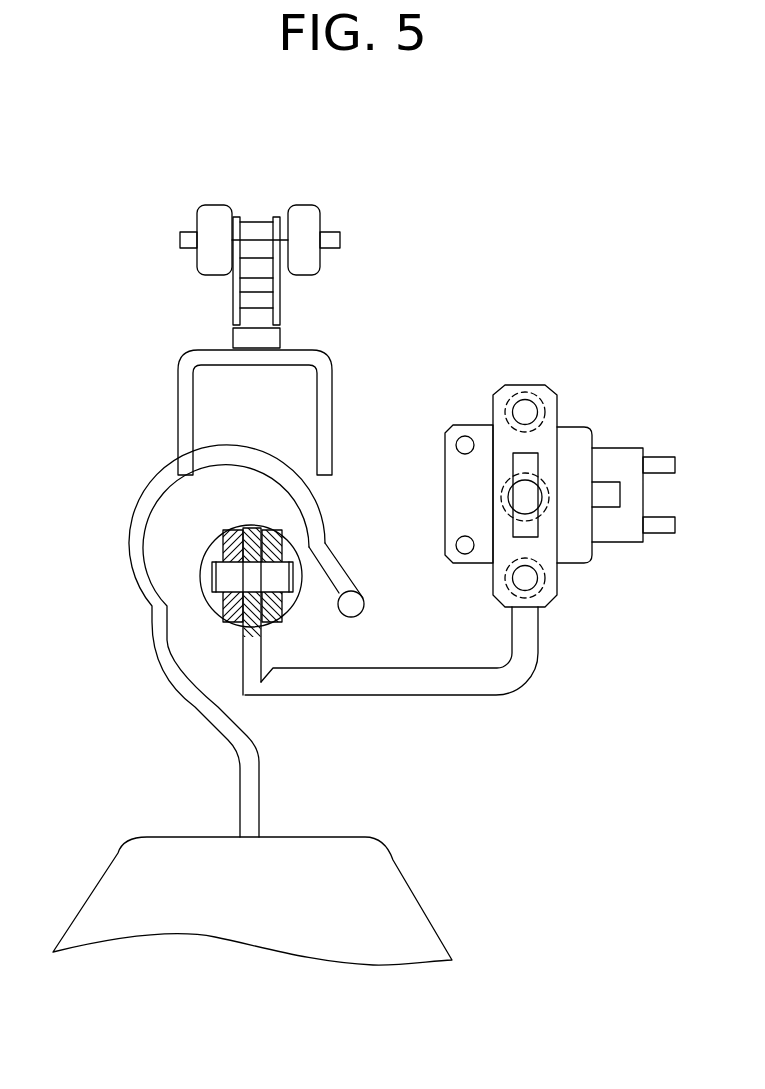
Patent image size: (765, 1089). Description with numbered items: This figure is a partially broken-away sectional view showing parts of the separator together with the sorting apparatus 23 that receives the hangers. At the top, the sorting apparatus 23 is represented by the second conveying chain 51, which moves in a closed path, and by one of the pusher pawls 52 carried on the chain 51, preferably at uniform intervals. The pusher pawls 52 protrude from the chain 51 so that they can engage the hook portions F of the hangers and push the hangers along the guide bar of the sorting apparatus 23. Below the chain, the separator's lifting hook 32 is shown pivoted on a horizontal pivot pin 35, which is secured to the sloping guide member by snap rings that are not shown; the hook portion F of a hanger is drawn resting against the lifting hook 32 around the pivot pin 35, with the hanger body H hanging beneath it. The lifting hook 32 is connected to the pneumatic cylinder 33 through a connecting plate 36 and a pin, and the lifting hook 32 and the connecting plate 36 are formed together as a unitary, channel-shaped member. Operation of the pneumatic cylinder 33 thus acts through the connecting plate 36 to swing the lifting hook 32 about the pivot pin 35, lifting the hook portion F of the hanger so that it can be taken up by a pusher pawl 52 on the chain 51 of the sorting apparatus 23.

The second conveying chain 51 is at (318, 200).
The pusher pawls 52 is at (339, 370).
The sorting apparatus 23 is at (556, 463).
The pneumatic cylinder 33 is at (588, 428).
The connecting plate 36 is at (540, 650).
The lifting hook 32 is at (263, 658).
The horizontal pivot pin 35 is at (212, 585).
The hook portions F is at (145, 594).
The hanger base H is at (119, 836).